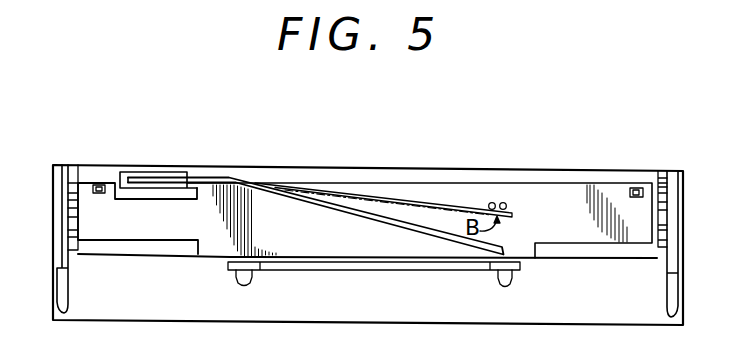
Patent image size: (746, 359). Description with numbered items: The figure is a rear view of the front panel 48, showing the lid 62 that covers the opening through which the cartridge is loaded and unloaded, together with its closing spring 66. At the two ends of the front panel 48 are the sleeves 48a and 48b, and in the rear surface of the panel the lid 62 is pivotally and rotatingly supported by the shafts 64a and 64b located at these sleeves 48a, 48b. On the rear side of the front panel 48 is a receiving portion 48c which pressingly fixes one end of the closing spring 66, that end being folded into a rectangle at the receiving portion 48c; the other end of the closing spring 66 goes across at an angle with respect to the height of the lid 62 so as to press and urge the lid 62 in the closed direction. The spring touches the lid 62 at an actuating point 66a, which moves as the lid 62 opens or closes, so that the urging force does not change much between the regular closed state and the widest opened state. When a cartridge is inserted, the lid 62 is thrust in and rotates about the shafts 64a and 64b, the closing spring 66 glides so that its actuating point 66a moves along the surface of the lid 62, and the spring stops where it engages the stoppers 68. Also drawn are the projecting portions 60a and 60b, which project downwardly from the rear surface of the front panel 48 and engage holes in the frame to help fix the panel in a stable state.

The front panel 48 is at (572, 177).
The sleeve 48a is at (63, 218).
The sleeve 48b is at (672, 228).
The receiving portion 48c is at (164, 172).
The lid 62 is at (130, 232).
The shaft 64a is at (98, 185).
The shaft 64b is at (638, 187).
The closing spring 66 is at (393, 206).
The actuating point 66a is at (506, 248).
The stoppers 68 is at (503, 203).
The projecting portion 60a is at (245, 285).
The projecting portion 60b is at (505, 287).